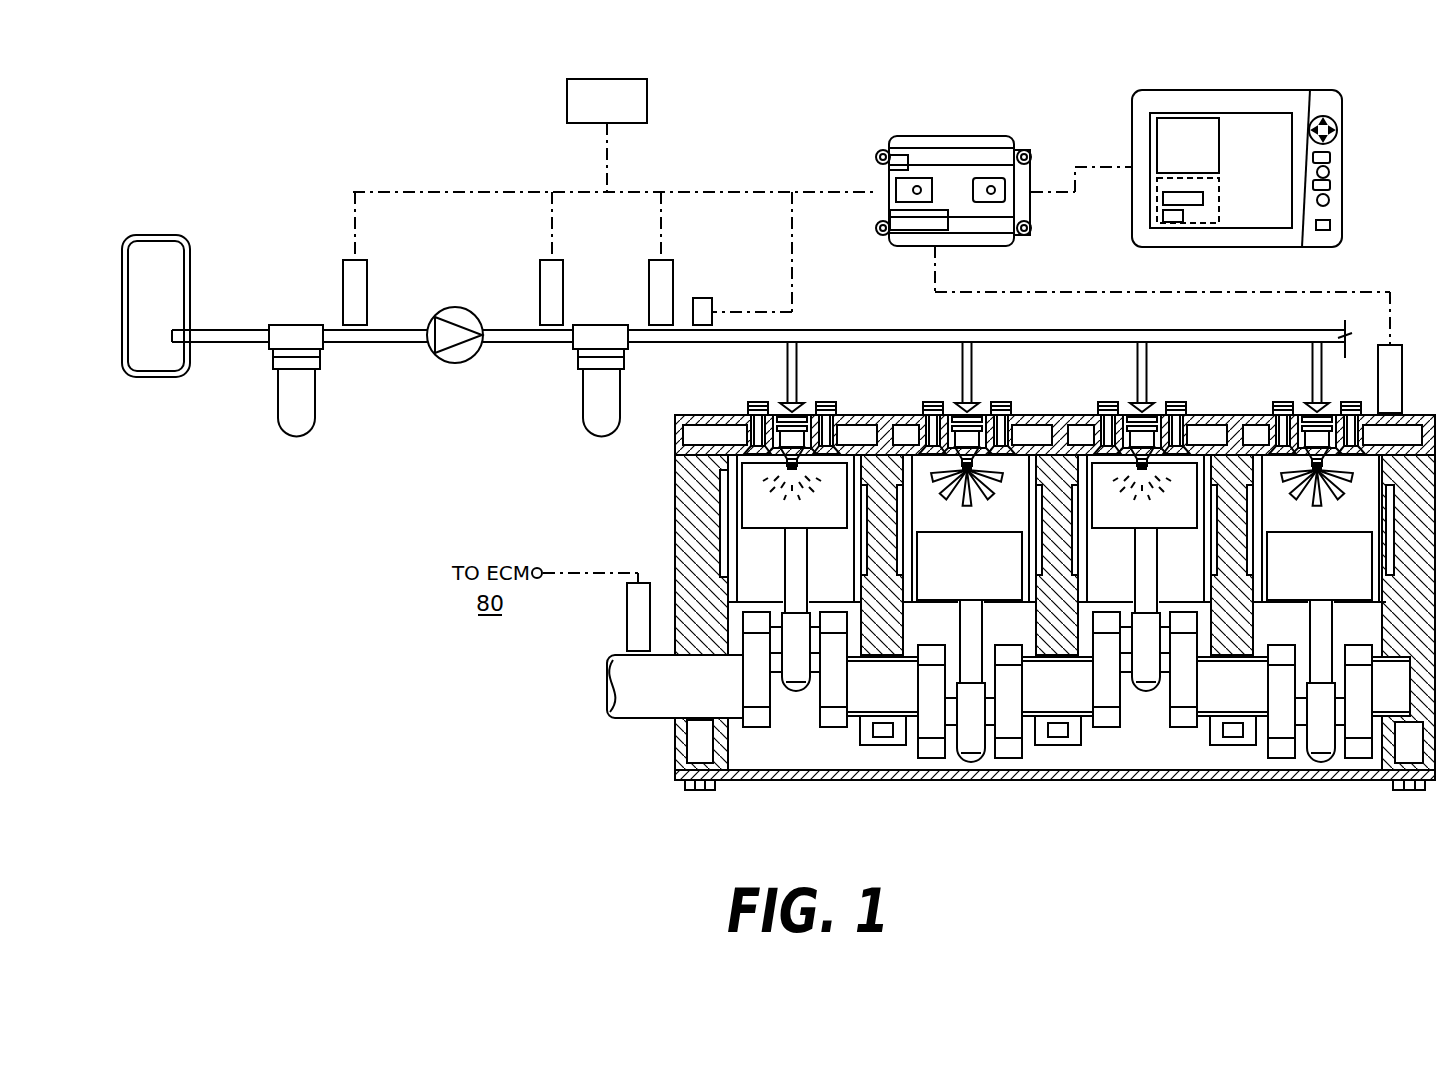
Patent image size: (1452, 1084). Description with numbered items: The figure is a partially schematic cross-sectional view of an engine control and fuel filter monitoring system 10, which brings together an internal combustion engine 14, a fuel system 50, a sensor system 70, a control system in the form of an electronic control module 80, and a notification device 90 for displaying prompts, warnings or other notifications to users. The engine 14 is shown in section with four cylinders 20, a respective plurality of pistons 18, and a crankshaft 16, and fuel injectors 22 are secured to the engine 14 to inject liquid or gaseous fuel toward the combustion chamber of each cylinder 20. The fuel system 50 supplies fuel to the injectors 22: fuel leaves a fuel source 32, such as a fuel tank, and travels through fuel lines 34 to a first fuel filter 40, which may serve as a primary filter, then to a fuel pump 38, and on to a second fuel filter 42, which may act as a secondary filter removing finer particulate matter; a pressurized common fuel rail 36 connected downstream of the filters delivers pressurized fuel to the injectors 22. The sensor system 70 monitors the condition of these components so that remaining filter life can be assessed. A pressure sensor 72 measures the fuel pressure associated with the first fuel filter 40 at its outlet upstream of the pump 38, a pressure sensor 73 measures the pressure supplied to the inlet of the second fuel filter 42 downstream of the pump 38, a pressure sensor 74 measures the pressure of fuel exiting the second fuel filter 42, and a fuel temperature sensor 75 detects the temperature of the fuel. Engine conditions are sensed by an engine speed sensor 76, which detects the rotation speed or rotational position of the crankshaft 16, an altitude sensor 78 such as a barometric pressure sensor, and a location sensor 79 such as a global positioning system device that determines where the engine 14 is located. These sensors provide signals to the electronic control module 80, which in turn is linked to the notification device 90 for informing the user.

The engine control and fuel filter monitoring system 10 is at (222, 158).
The internal combustion engine 14 is at (680, 512).
The crankshaft 16 is at (623, 708).
The pistons 18 is at (727, 480).
The cylinders 20 is at (747, 545).
The fuel injectors 22 is at (785, 412).
The fuel source 32 is at (187, 275).
The fuel lines 34 is at (218, 343).
The common fuel rail 36 is at (860, 331).
The fuel pump 38 is at (443, 364).
The first fuel filter 40 is at (282, 410).
The second fuel filter 42 is at (585, 405).
The fuel system 50 is at (199, 437).
The sensor system 70 is at (321, 235).
The pressure sensor 72 is at (352, 277).
The pressure sensor 73 is at (548, 277).
The pressure sensor 74 is at (658, 277).
The fuel temperature sensor 75 is at (703, 298).
The engine speed sensor 76 is at (630, 618).
The altitude sensor 78 is at (1400, 365).
The location sensor 79 is at (567, 107).
The electronic control module 80 is at (892, 170).
The notification device 90 is at (1342, 210).